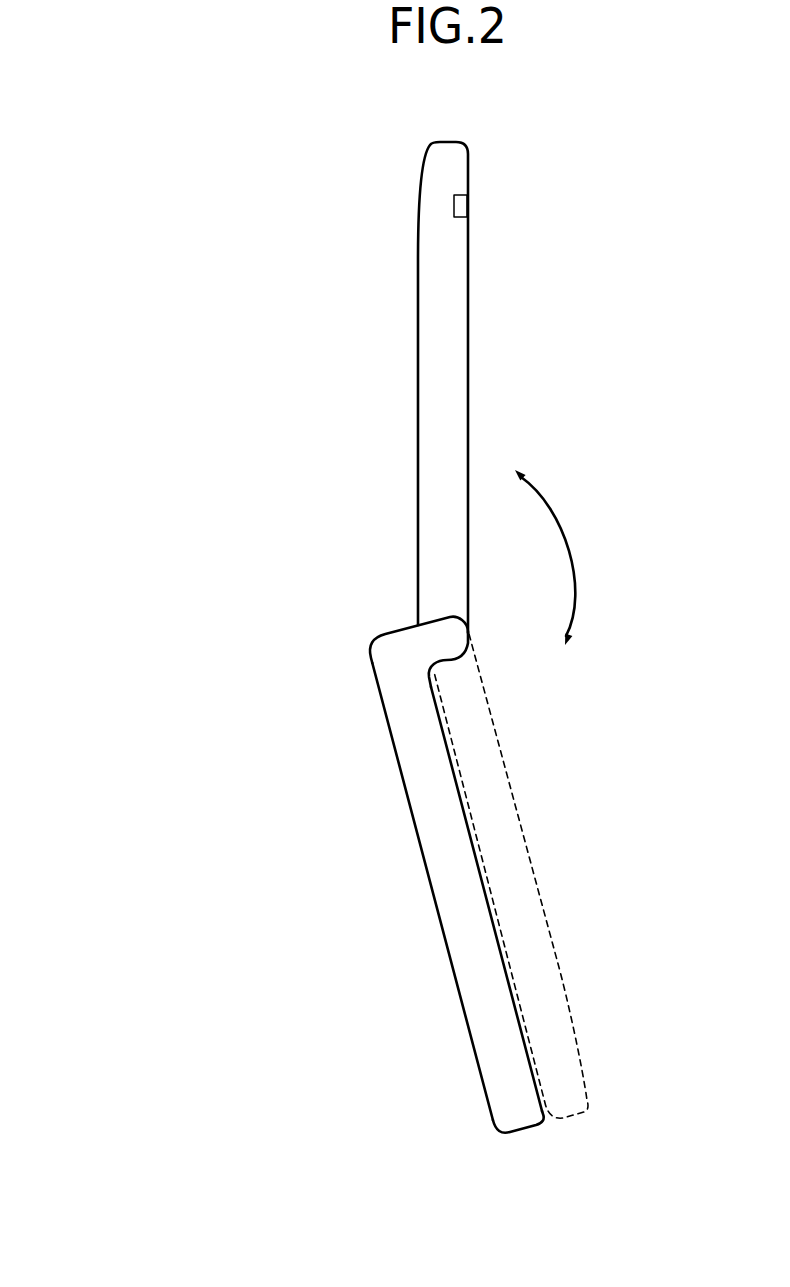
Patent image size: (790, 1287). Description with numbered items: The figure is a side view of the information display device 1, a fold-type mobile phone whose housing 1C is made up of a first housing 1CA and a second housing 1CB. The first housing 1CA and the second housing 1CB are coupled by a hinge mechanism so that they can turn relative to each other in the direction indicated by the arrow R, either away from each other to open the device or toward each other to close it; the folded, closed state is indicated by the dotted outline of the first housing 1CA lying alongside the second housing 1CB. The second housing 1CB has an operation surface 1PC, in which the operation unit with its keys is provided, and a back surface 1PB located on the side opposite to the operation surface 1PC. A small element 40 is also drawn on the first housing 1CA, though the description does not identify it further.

The information display device 1 is at (313, 166).
The housing 1C is at (158, 560).
The first housing 1CA is at (435, 567).
The second housing 1CB is at (391, 732).
The back surface 1PB is at (432, 920).
The operation surface 1PC is at (521, 1001).
The button 40 is at (462, 207).
The arrow R is at (567, 540).